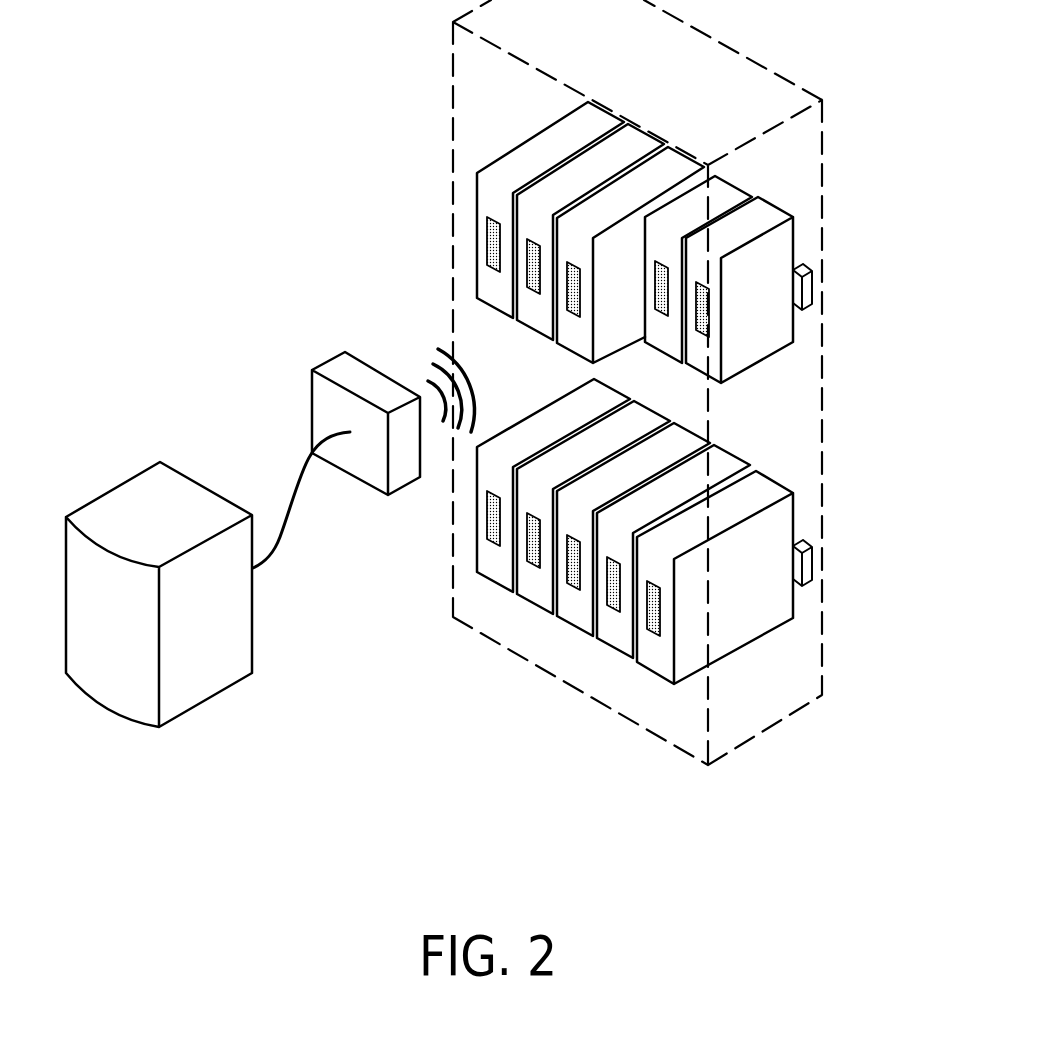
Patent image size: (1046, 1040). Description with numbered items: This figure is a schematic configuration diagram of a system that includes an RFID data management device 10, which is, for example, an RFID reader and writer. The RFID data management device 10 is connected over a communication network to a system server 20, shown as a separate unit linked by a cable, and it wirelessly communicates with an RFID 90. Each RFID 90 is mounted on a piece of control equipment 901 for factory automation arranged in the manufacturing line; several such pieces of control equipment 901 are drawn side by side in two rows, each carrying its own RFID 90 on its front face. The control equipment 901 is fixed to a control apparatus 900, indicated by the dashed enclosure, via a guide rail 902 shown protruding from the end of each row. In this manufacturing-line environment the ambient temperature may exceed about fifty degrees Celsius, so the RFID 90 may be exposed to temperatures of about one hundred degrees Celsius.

The RFID data management device 10 is at (330, 368).
The system server 20 is at (117, 505).
The RFID 90 is at (575, 290).
The control apparatus 900 is at (785, 80).
The control equipment 901 is at (763, 212).
The guide rail 902 is at (813, 567).